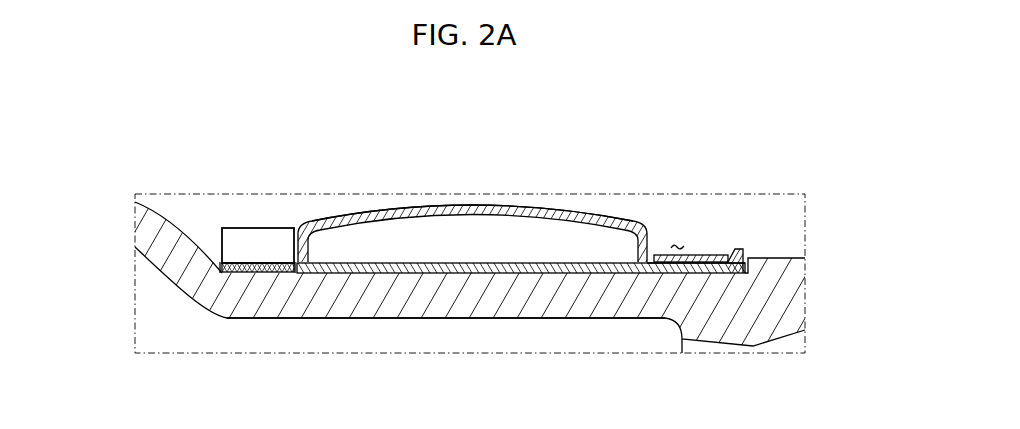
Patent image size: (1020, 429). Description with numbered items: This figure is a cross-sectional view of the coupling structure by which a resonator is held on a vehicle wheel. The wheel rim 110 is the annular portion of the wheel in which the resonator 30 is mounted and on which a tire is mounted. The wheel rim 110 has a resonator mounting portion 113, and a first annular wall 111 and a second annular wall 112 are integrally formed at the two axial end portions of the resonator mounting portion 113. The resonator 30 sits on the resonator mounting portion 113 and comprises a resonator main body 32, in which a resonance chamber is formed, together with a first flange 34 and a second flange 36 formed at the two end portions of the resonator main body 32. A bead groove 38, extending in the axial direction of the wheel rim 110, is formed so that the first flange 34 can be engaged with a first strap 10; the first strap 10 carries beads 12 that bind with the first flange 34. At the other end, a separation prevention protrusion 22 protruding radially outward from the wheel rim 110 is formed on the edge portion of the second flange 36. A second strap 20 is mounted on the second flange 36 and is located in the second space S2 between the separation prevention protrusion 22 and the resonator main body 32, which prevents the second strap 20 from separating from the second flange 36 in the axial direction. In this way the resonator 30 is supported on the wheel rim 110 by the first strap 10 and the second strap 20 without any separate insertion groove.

The first strap 10 is at (265, 228).
The beads 12 is at (236, 268).
The second strap 20 is at (707, 255).
The separation prevention protrusion 22 is at (742, 249).
The resonator 30 is at (506, 206).
The resonator main body 32 is at (396, 212).
The first flange 34 is at (220, 262).
The second flange 36 is at (698, 265).
The bead groove 38 is at (296, 268).
The wheel rim 110 is at (167, 270).
The first annular wall 111 is at (163, 232).
The second annular wall 112 is at (777, 260).
The resonator mounting portion 113 is at (437, 293).
The second space S2 is at (678, 244).